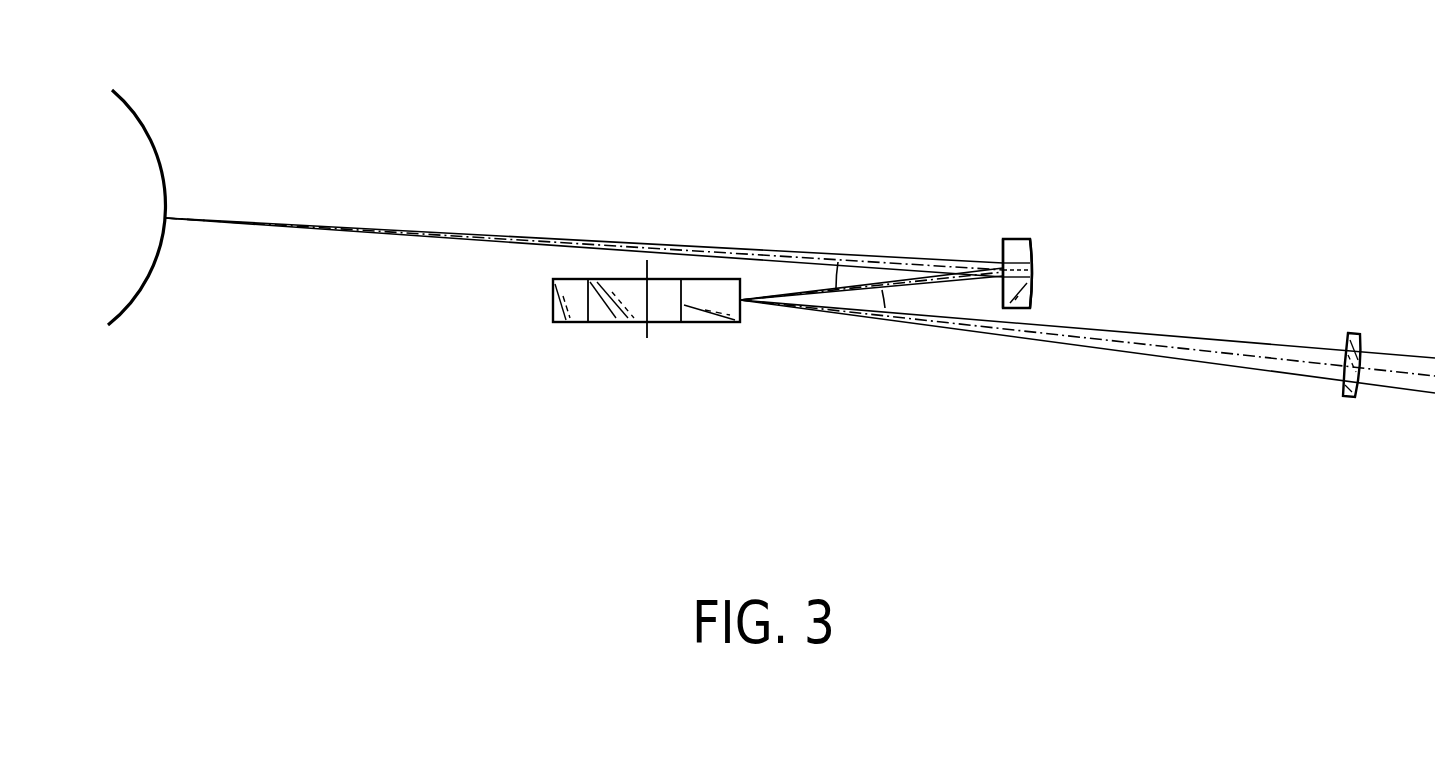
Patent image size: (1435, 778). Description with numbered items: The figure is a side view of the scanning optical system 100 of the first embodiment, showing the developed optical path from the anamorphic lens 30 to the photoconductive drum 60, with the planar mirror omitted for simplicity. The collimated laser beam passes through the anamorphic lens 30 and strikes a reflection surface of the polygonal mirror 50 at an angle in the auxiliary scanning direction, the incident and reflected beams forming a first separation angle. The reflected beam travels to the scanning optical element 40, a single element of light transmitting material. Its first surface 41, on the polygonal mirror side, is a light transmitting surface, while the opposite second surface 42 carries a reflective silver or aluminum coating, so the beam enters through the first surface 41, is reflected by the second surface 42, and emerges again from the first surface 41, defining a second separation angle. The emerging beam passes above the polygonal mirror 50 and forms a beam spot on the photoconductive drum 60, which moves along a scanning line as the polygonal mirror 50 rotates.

The scanning optical system 100 is at (1008, 84).
The photoconductive drum 60 is at (153, 270).
The polygonal mirror 50 is at (615, 322).
The scanning optical element 40 is at (1017, 248).
The first surface 41 is at (1000, 250).
The second surface 42 is at (1033, 255).
The anamorphic lens 30 is at (1343, 398).